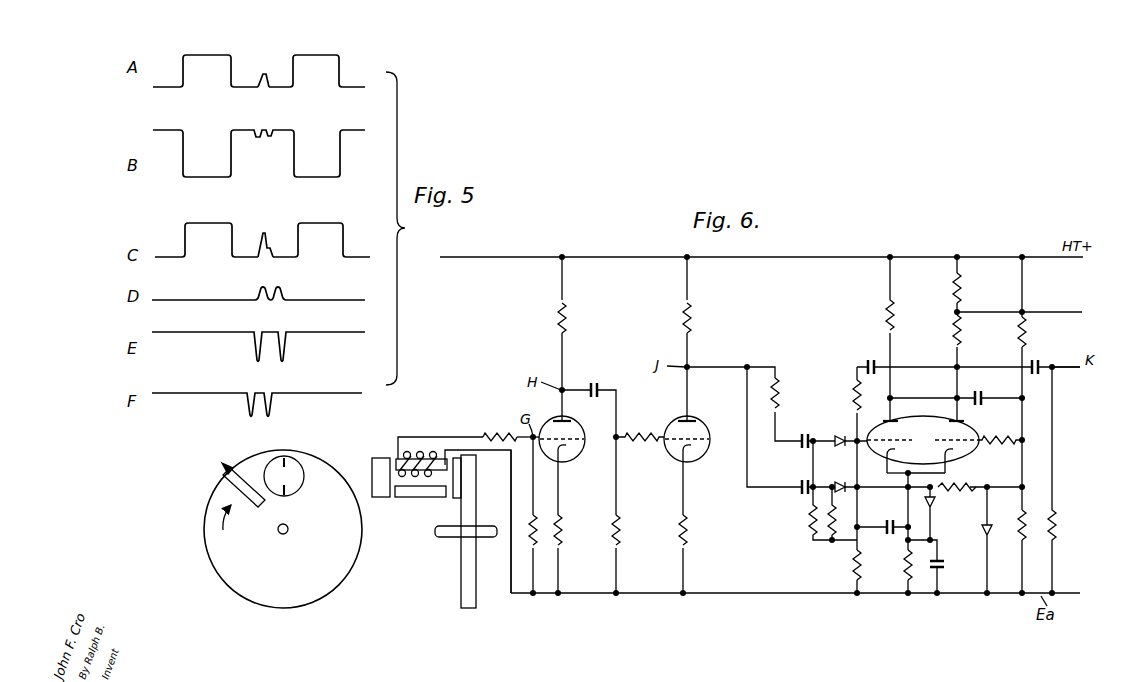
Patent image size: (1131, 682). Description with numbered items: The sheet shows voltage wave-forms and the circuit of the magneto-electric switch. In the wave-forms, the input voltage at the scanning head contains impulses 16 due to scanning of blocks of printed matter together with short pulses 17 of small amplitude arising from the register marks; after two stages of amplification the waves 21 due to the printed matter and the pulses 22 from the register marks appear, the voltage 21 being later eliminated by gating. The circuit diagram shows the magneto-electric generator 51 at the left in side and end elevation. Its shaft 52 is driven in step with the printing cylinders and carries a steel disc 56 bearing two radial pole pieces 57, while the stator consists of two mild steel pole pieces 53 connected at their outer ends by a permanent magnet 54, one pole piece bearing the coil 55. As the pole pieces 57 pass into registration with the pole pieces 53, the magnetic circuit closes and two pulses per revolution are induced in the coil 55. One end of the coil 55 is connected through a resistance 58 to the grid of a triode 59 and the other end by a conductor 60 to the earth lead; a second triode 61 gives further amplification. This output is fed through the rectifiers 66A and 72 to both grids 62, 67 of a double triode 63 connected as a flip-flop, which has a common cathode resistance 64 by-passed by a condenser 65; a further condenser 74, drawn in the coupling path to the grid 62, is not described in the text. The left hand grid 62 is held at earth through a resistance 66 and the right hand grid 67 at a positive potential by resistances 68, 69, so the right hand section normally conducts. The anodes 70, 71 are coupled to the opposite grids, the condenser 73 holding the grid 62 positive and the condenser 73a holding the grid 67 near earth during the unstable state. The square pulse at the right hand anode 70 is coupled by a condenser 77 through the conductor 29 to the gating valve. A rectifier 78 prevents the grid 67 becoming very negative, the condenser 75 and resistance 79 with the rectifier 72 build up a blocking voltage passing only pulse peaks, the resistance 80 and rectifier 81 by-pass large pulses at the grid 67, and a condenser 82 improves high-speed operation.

In FIG. 5, the impulses due to scanning of blocks of printed matter 16 is at (181, 72).
In FIG. 5, the short pulses from register marks 17 is at (264, 76).
In FIG. 5, the waves due to printed matter 21 is at (187, 240).
In FIG. 5, the pulses from register marks 22 is at (264, 243).
In FIG. 6, the conductor 29 is at (1063, 369).
In FIG. 6, the magneto-electric generator 51 is at (374, 447).
In FIG. 6, the shaft 52 is at (280, 534).
In FIG. 6, the pole pieces 53 is at (289, 456).
In FIG. 6, the permanent magnet 54 is at (372, 477).
In FIG. 6, the coil 55 is at (427, 458).
In FIG. 6, the steel disc 56 is at (338, 573).
In FIG. 6, the radial pole pieces 57 is at (228, 469).
In FIG. 6, the resistance 58 is at (501, 434).
In FIG. 6, the triode 59 is at (576, 431).
In FIG. 6, the conductor 60 is at (511, 473).
In FIG. 6, the second triode 61 is at (701, 431).
In FIG. 6, the left hand grid 62 is at (879, 460).
In FIG. 6, the double triode 63 is at (931, 413).
In FIG. 6, the common cathode resistance 64 is at (905, 578).
In FIG. 6, the condenser 65 is at (941, 571).
In FIG. 6, the resistance 66 is at (853, 578).
In FIG. 6, the rectifier 66A is at (838, 434).
In FIG. 6, the right hand grid 67 is at (965, 461).
In FIG. 6, the resistance 68 is at (1017, 343).
In FIG. 6, the resistance 69 is at (1024, 518).
In FIG. 6, the right hand anode 70 is at (966, 421).
In FIG. 6, the left hand anode 71 is at (889, 421).
In FIG. 6, the rectifier 72 is at (848, 492).
In FIG. 6, the condenser 73 is at (867, 363).
In FIG. 6, the condenser 73a is at (983, 397).
In FIG. 6, the capacitor 74 is at (806, 434).
In FIG. 6, the condenser 75 is at (803, 492).
In FIG. 6, the condenser 77 is at (1040, 365).
In FIG. 6, the rectifier 78 is at (990, 538).
In FIG. 6, the resistance 79 is at (833, 543).
In FIG. 6, the resistance 80 is at (957, 503).
In FIG. 6, the rectifier 81 is at (936, 507).
In FIG. 6, the condenser 82 is at (891, 537).